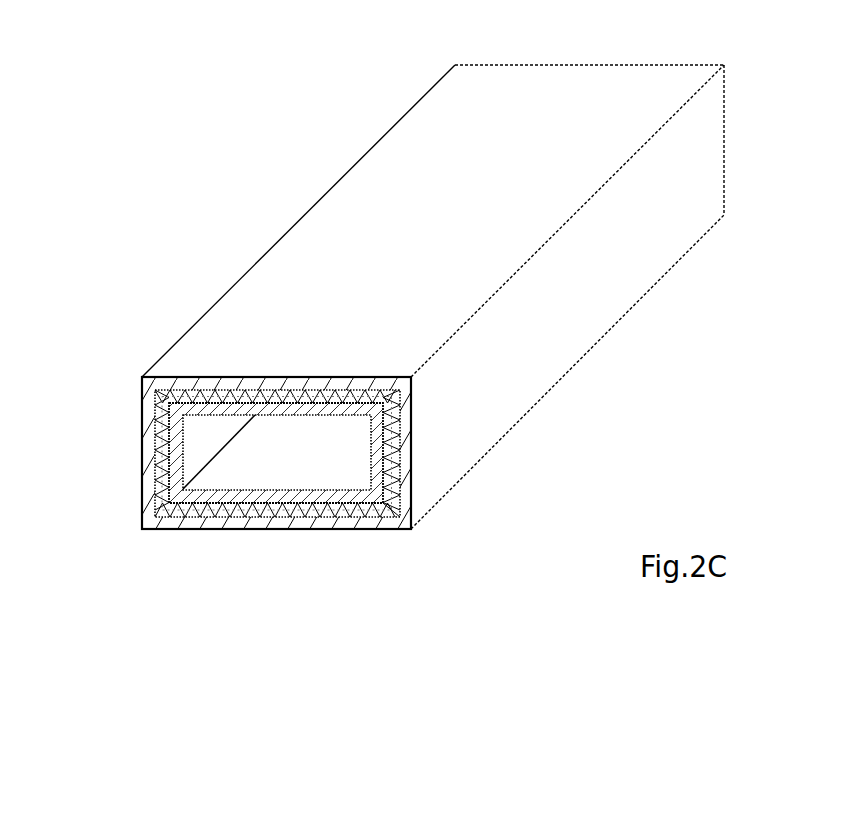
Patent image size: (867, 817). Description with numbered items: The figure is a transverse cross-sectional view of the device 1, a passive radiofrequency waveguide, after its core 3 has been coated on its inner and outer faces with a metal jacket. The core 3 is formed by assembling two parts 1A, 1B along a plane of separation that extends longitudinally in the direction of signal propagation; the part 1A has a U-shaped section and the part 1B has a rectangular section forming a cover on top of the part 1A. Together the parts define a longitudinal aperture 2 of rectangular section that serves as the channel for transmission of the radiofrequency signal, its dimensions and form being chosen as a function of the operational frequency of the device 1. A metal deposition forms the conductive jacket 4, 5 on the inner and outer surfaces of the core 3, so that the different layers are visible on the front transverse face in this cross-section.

The device 1 is at (168, 560).
The part 1A is at (150, 459).
The part 1B is at (153, 392).
The longitudinal aperture 2 is at (310, 477).
The core 3 is at (395, 507).
The conductive jacket 4 is at (144, 498).
The conductive jacket 5 is at (150, 428).